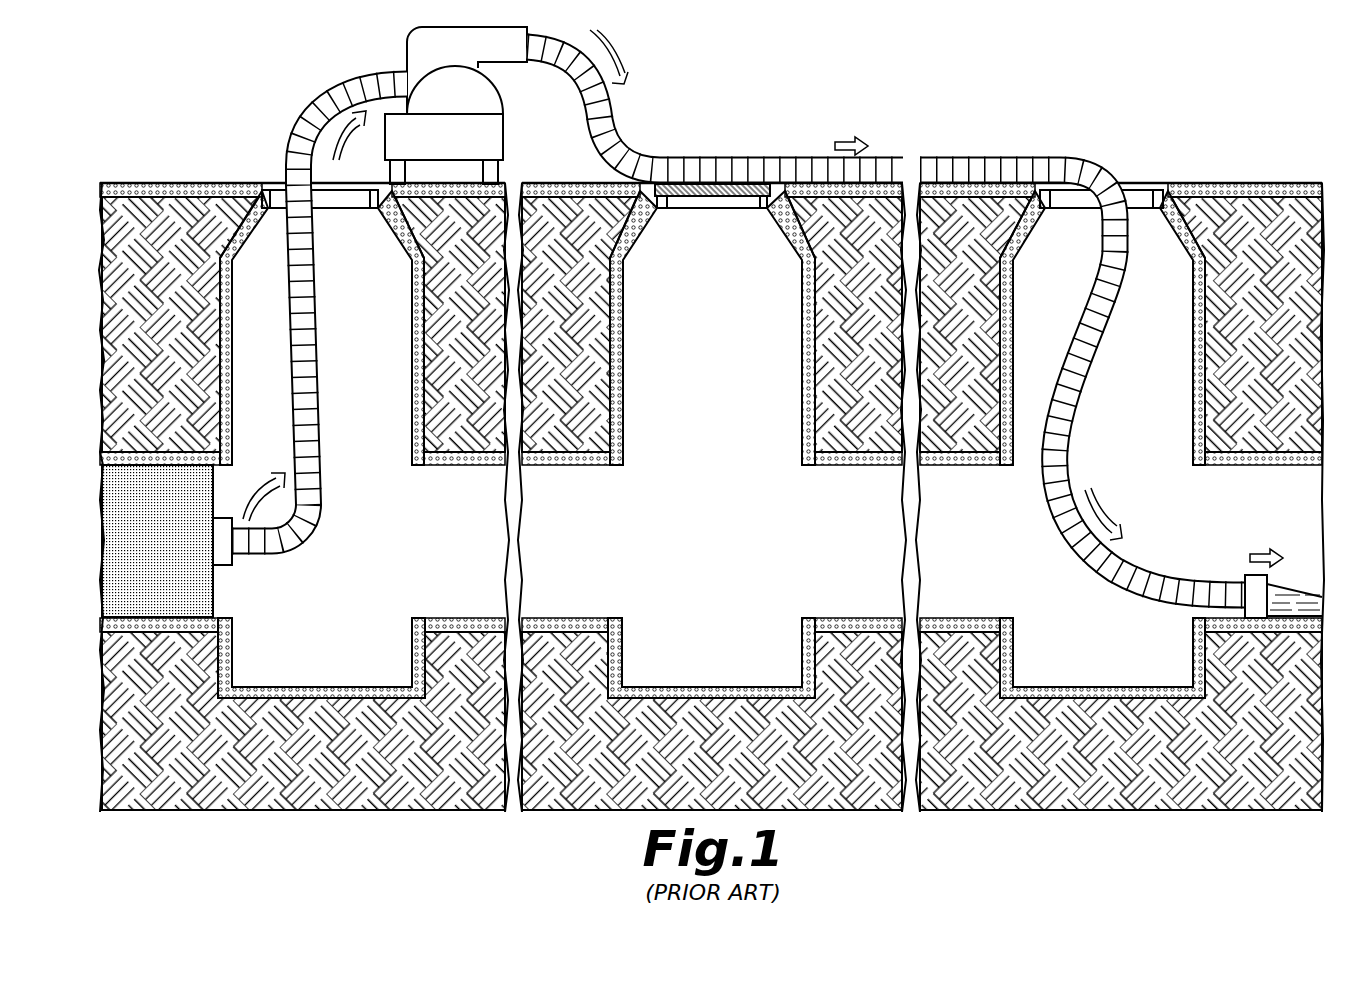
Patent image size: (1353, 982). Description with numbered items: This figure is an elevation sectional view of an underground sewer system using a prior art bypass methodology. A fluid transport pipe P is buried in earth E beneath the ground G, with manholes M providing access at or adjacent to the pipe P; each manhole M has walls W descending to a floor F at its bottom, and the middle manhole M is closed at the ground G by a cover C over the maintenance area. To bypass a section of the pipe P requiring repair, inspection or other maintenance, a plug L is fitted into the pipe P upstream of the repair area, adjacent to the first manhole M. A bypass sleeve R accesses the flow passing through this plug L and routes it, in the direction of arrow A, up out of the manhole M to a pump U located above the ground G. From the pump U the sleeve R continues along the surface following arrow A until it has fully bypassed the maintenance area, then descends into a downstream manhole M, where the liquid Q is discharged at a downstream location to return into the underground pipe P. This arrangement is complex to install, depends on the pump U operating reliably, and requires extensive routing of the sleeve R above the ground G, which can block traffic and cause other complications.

The ground G is at (1284, 183).
The earth E is at (1286, 336).
The manhole wall W is at (1193, 655).
The manhole M is at (1121, 394).
The pipe P is at (1232, 457).
The floor F is at (1105, 687).
The plug L is at (139, 558).
The bypass sleeve R is at (1058, 528).
The arrow A is at (1263, 552).
The pump U is at (436, 149).
The manhole cover C is at (730, 184).
The liquid Q is at (1293, 595).